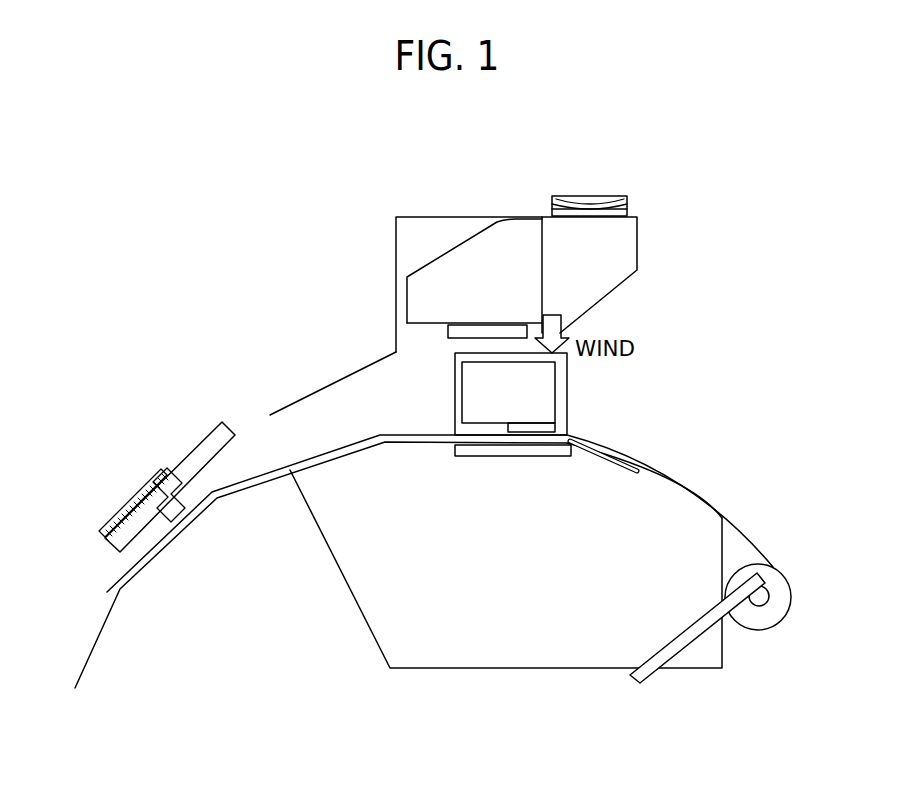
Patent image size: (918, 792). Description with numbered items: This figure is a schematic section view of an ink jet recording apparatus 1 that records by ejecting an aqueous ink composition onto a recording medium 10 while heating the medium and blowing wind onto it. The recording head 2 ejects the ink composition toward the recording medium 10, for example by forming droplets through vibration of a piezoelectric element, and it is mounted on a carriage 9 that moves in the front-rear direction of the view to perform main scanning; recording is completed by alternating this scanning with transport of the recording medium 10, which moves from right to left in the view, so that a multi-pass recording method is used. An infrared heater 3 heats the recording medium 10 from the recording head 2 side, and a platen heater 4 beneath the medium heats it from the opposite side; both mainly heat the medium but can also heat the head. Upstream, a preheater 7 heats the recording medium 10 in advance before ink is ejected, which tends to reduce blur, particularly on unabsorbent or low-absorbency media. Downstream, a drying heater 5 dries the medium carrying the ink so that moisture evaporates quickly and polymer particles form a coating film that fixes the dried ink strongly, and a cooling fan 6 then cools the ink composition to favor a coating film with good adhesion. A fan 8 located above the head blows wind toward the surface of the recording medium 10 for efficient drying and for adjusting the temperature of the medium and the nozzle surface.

The recording apparatus 1 is at (706, 398).
The recording head 2 is at (566, 432).
The infrared (IR) heater 3 is at (447, 329).
The platen heater 4 is at (517, 457).
The drying heater 5 is at (198, 448).
The cooling fan 6 is at (135, 500).
The preheater 7 is at (610, 468).
The fan 8 is at (588, 197).
The carriage 9 is at (453, 406).
The recording medium 10 is at (750, 541).